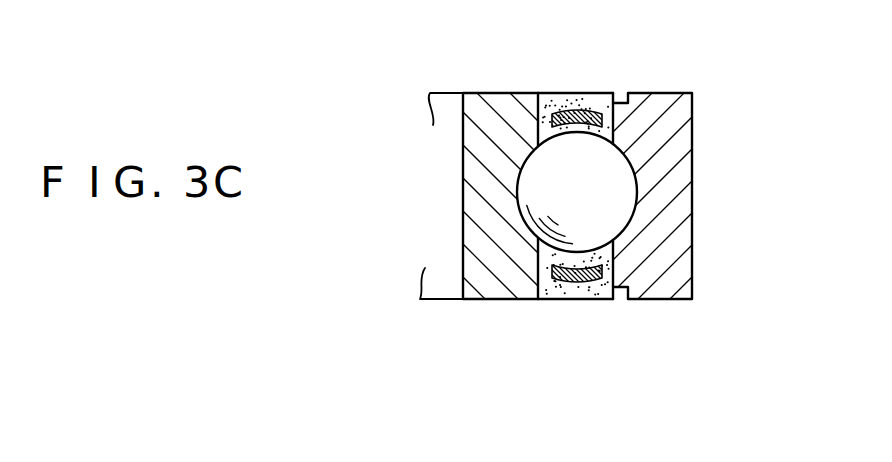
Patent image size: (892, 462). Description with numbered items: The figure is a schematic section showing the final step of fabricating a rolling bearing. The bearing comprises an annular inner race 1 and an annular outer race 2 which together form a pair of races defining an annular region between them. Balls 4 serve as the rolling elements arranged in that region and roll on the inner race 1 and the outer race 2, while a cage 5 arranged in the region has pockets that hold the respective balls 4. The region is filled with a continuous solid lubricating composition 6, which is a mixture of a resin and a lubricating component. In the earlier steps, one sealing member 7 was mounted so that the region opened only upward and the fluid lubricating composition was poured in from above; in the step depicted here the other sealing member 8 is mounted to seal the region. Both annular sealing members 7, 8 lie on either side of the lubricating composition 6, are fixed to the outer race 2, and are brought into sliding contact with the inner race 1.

The annular inner race 1 is at (467, 195).
The annular outer race 2 is at (693, 200).
The balls 4 is at (627, 157).
The cage 5 is at (570, 110).
The continuous solid lubricating composition 6 is at (555, 285).
The sealing member 7 is at (595, 300).
The sealing member 8 is at (588, 92).